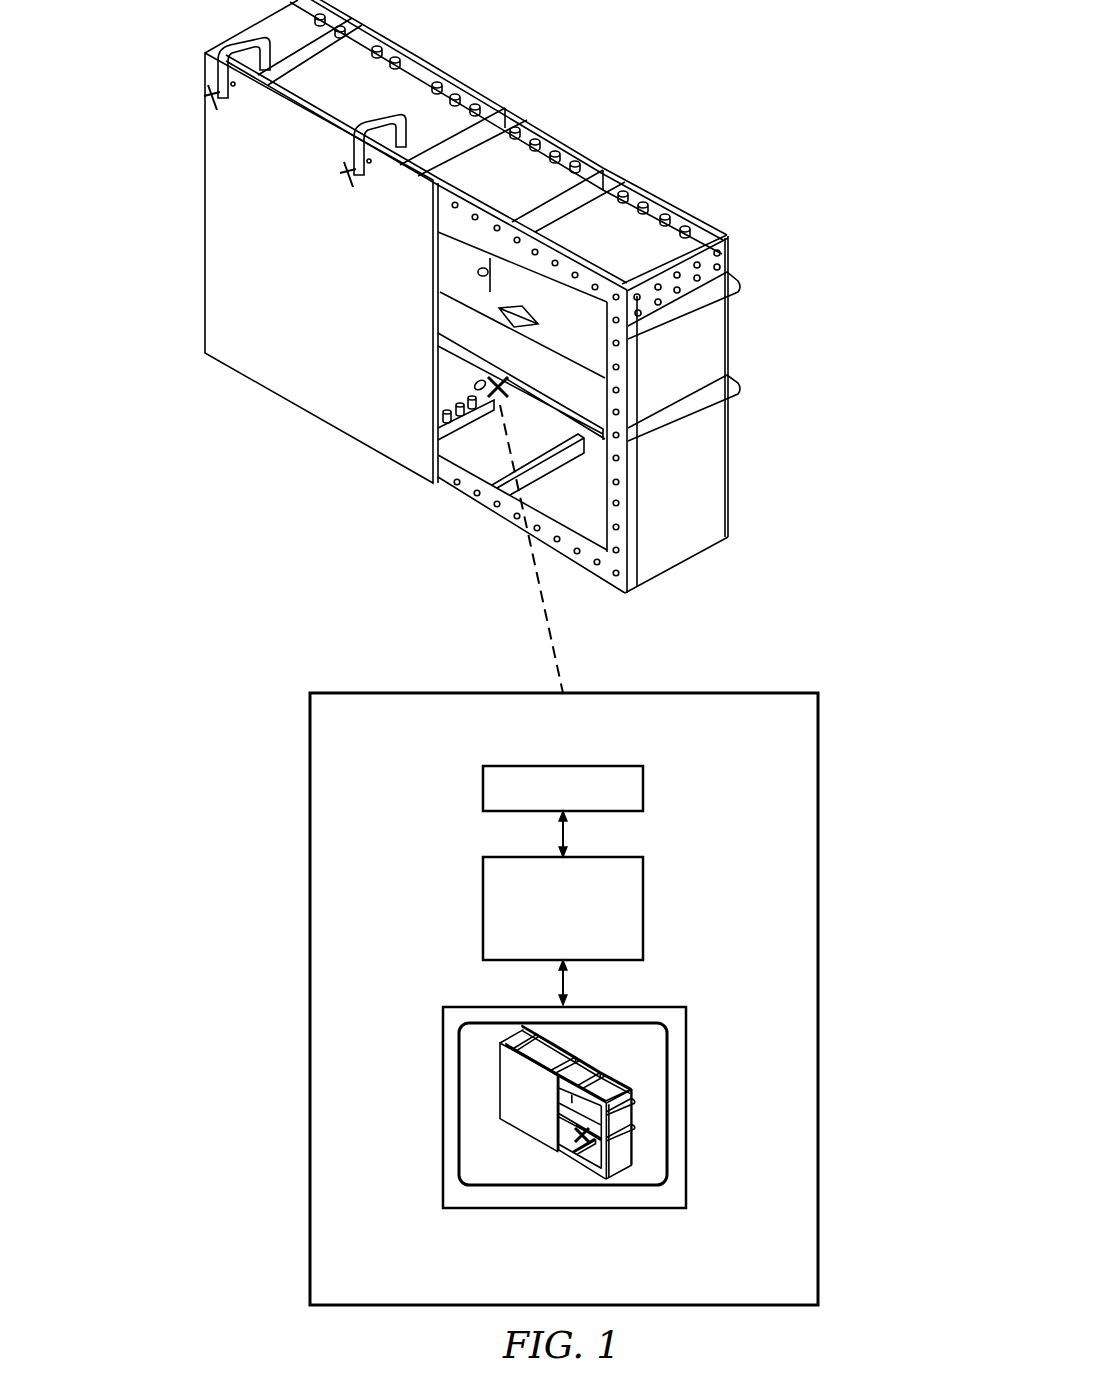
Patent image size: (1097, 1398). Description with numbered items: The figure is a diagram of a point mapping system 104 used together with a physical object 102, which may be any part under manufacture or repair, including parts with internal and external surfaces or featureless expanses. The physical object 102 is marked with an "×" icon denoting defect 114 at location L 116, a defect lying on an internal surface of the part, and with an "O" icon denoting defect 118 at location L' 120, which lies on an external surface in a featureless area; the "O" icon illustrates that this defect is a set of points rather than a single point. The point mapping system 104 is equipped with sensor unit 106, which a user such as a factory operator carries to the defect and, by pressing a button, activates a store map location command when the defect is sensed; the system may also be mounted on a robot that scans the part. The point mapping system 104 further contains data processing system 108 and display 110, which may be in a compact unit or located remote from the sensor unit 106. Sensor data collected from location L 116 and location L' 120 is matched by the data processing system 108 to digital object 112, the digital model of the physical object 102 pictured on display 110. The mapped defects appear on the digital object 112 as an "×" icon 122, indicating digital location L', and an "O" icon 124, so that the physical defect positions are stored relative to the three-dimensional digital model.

The physical object 102 is at (472, 296).
The point mapping system 104 is at (783, 748).
The sensor unit 106 is at (483, 787).
The data processing system 108 is at (483, 908).
The display 110 is at (443, 1115).
The digital object 112 is at (622, 1080).
The defect 114 is at (491, 414).
The location L 116 is at (401, 359).
The defect 118 is at (309, 260).
The location L' 120 is at (317, 232).
The "×" icon / digital location L' 122 is at (583, 1145).
The "O" icon 124 is at (503, 1088).